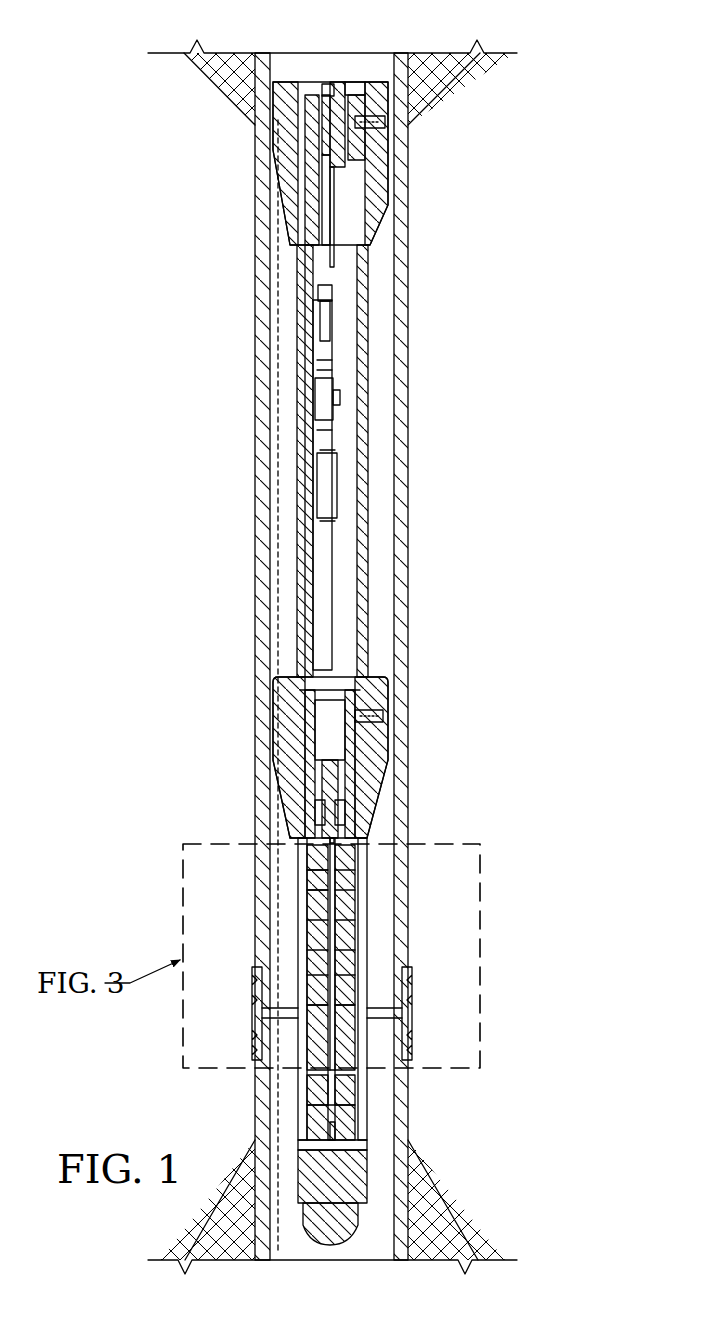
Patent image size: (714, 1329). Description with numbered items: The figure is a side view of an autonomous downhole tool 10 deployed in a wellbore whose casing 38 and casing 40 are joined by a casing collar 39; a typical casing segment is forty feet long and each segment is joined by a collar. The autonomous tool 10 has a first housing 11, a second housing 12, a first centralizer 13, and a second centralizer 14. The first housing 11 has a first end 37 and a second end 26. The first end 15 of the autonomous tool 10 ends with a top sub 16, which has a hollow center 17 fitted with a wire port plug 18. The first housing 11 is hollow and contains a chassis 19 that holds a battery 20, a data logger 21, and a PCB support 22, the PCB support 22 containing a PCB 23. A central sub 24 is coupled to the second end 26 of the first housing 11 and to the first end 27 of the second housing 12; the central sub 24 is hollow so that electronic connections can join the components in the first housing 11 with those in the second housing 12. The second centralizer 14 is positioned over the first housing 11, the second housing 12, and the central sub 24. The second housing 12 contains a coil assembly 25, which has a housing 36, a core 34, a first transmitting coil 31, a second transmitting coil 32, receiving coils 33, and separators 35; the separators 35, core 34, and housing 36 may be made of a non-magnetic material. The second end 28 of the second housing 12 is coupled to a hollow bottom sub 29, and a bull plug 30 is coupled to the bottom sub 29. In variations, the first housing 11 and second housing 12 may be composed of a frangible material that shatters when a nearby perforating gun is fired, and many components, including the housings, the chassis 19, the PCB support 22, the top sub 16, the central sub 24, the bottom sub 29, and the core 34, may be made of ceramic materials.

The autonomous tool 10 is at (546, 400).
The first housing 11 is at (360, 390).
The second housing 12 is at (362, 1093).
The first centralizer 13 is at (373, 198).
The second centralizer 14 is at (282, 750).
The first end 15 is at (355, 82).
The top sub 16 is at (300, 132).
The hollow center 17 is at (386, 120).
The wire port plug 18 is at (330, 82).
The chassis 19 is at (323, 563).
The battery 20 is at (330, 475).
The data logger 21 is at (320, 392).
The PCB support 22 is at (333, 298).
The PCB 23 is at (333, 270).
The central sub 24 is at (357, 800).
The coil assembly 25 is at (360, 880).
The second end 26 is at (298, 733).
The first end 27 is at (358, 768).
The second end 28 is at (297, 1140).
The bottom sub 29 is at (360, 1170).
The bull plug 30 is at (360, 1217).
The first transmitting coil 31 is at (313, 862).
The second transmitting coil 32 is at (357, 1027).
The receiving coils 33 is at (322, 918).
The core 34 is at (317, 880).
The separators 35 is at (352, 912).
The housing 36 is at (367, 860).
The first end 37 is at (300, 107).
The casing 38 is at (263, 782).
The casing collar 39 is at (254, 1022).
The casing 40 is at (263, 1103).